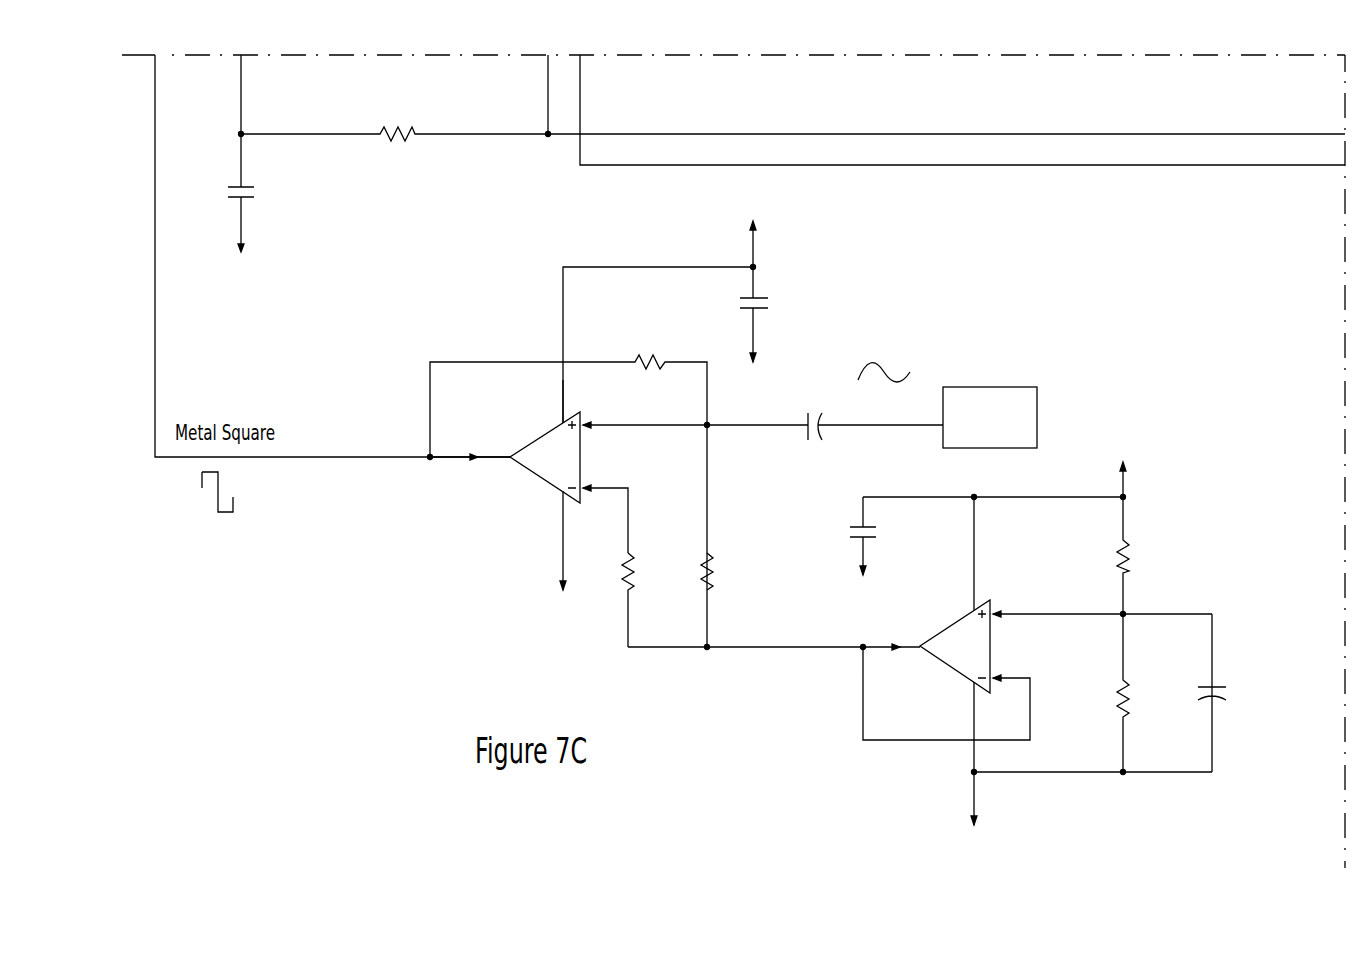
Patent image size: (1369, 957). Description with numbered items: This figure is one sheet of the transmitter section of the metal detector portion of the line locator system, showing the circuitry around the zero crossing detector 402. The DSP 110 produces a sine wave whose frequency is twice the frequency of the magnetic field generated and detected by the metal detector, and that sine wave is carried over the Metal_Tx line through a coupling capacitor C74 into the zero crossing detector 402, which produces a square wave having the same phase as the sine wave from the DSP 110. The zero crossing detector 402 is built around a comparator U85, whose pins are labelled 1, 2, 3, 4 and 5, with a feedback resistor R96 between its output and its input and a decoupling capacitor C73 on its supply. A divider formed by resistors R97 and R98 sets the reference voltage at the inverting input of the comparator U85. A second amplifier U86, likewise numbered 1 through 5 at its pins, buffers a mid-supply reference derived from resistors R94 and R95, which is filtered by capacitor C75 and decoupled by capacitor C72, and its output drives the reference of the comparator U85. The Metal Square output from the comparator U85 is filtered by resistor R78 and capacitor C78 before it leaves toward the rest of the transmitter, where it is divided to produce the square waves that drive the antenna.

The zero crossing detector 402 is at (518, 317).
The DSP 110 is at (1037, 398).
The op-amp pin 1 (output) 1 is at (674, 538).
The op-amp pin 2 (ground) 2 is at (878, 666).
The op-amp pin 3 (non-inverting input) 3 is at (897, 505).
The op-amp pin 4 (inverting input) 4 is at (806, 598).
The op-amp pin 5 (supply) 5 is at (761, 494).
The resistor R78 10k R78 is at (792, 136).
The capacitor C78 220pF C78 is at (264, 176).
The capacitor C73 0.1uF C73 is at (771, 302).
The resistor R96 1M R96 is at (570, 487).
The resistor R97 10k R97 is at (728, 575).
The resistor R98 10k R98 is at (652, 597).
The capacitor C74 22uF C74 is at (866, 456).
The comparator U85 MCP6541 U85 is at (520, 472).
The op-amp U86 MCP6001 U86 is at (987, 604).
The capacitor C72 0.1uF C72 is at (889, 555).
The resistor R94 10k R94 is at (1146, 541).
The resistor R95 10k R95 is at (1145, 693).
The capacitor C75 22uF C75 is at (1237, 693).